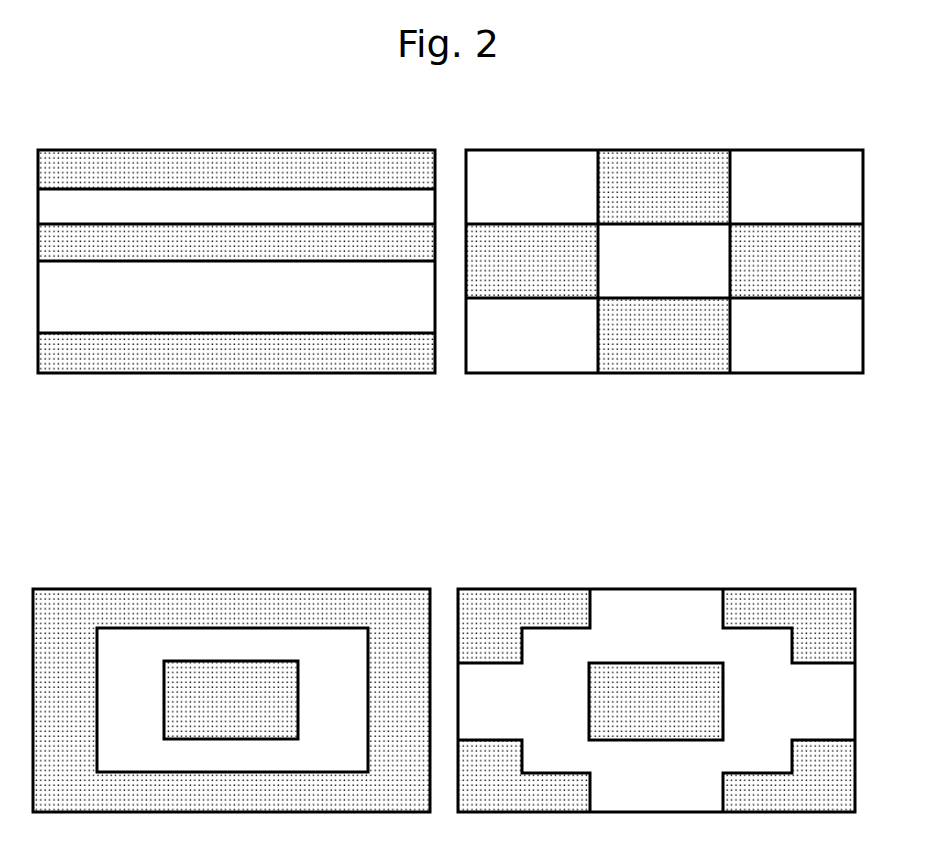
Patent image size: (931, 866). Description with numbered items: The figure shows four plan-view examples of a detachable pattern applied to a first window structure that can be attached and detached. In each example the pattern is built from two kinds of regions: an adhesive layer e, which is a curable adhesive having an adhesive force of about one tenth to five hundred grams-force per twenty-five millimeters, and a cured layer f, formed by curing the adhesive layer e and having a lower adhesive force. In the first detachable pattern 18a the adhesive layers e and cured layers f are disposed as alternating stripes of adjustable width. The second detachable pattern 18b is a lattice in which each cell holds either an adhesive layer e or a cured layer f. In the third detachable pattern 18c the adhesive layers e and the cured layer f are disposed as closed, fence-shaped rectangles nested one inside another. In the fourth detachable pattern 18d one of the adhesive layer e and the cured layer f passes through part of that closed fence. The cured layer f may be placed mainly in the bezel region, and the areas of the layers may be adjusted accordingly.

The first detachable pattern 18a is at (432, 137).
The second detachable pattern 18b is at (860, 137).
The third detachable pattern 18c is at (416, 569).
The fourth detachable pattern 18d is at (841, 569).
The adhesive layer e is at (230, 180).
The cured layer f is at (231, 217).